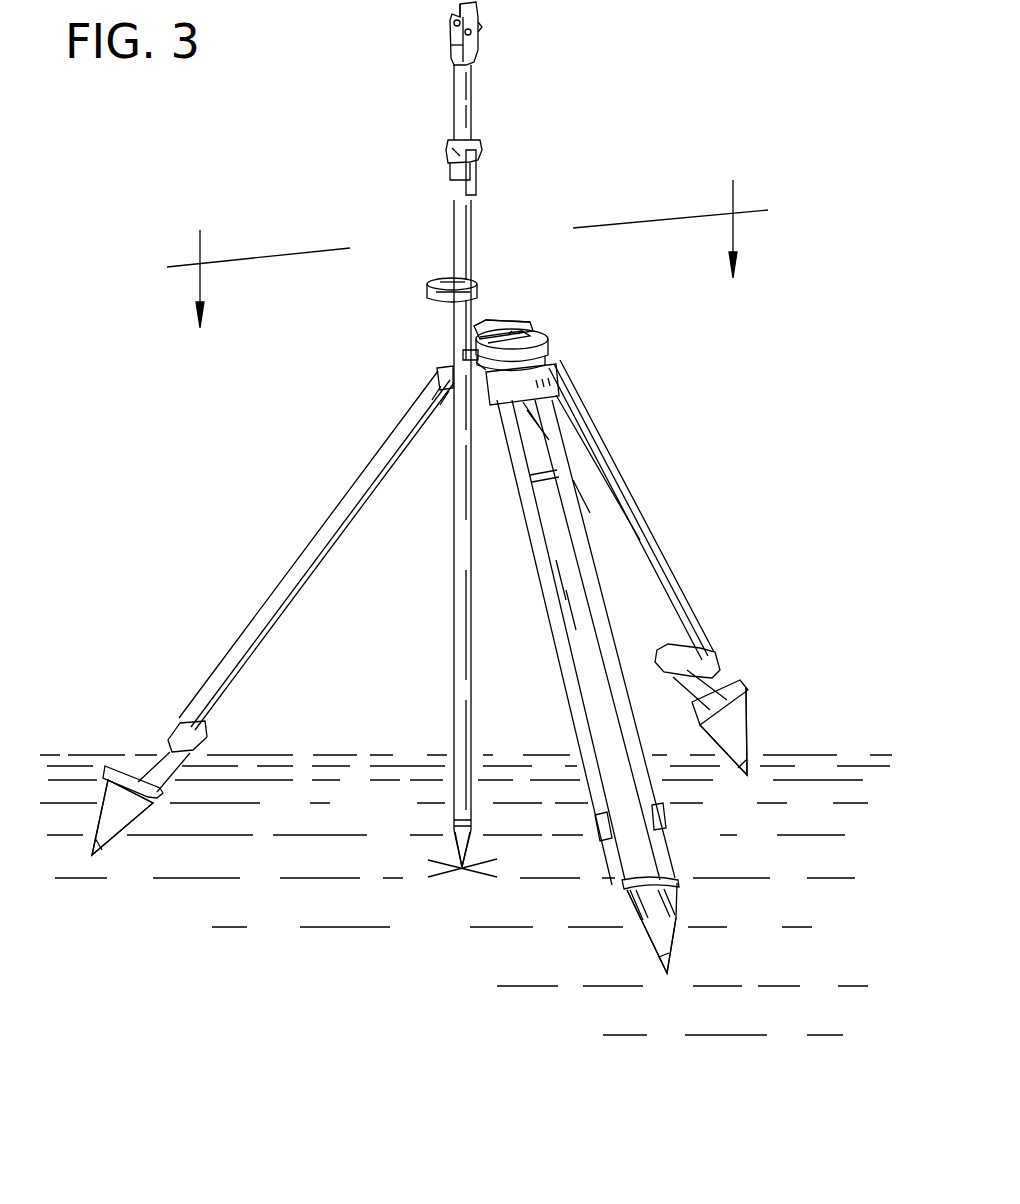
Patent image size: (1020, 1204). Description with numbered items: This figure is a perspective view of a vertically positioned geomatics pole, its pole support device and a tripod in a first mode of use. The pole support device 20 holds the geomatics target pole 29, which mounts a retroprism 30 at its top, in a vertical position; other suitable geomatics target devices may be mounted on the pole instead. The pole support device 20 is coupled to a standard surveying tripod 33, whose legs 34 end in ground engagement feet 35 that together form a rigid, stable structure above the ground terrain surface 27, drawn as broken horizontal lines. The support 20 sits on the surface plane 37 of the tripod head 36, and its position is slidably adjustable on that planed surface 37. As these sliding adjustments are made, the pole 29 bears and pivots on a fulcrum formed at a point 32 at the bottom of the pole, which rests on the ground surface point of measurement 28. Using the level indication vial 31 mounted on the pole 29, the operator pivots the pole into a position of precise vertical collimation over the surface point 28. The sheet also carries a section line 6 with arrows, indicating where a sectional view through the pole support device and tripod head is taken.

The section line 6- 6 is at (467, 248).
The pole support device 20 is at (500, 312).
The ground terrain surface 27 is at (320, 878).
The ground surface point of measurement 28 is at (458, 869).
The geomatics target pole 29 is at (452, 480).
The retroprism 30 is at (476, 31).
The level indication vial 31 is at (438, 297).
The fulcrum point 32 is at (462, 864).
The surveying tripod 33 is at (600, 440).
The legs 34 is at (316, 545).
The ground engagement feet 35 is at (112, 826).
The tripod head 36 is at (557, 365).
The surface plane 37 is at (548, 326).